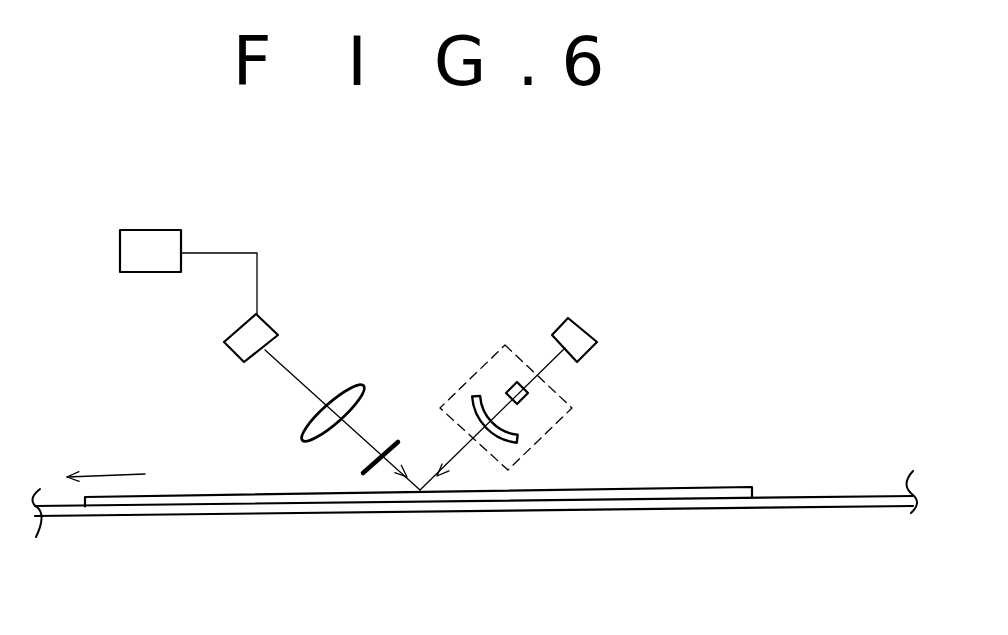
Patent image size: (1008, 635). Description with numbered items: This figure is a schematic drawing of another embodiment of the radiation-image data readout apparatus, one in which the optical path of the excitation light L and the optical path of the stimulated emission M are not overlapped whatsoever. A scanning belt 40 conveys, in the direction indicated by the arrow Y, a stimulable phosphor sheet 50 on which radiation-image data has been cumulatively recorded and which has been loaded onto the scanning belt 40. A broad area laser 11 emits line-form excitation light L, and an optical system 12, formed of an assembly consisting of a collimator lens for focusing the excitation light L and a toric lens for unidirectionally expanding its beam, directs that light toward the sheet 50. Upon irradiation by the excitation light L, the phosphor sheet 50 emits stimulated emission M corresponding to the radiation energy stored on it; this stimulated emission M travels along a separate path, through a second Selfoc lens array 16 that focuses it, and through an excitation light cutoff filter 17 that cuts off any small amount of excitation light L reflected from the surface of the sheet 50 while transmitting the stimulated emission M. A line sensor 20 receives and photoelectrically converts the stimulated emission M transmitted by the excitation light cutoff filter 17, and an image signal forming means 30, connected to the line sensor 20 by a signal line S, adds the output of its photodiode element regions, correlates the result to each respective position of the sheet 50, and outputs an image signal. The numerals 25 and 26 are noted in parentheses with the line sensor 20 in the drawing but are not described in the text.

The broad area laser 11 is at (590, 333).
The optical system 12 is at (576, 418).
The second Selfoc lens array 16 is at (350, 383).
The excitation light cutoff filter 17 is at (382, 480).
The line sensor 20 is at (190, 350).
The light source 25 is at (251, 338).
The light source 26 is at (222, 345).
The image signal forming means 30 is at (150, 251).
The scanning belt 40 is at (73, 518).
The stimulable phosphor sheet 50 is at (728, 488).
The control signal S is at (232, 252).
The stimulated emission M is at (370, 440).
The excitation light L is at (463, 457).
The conveying direction Y is at (106, 461).